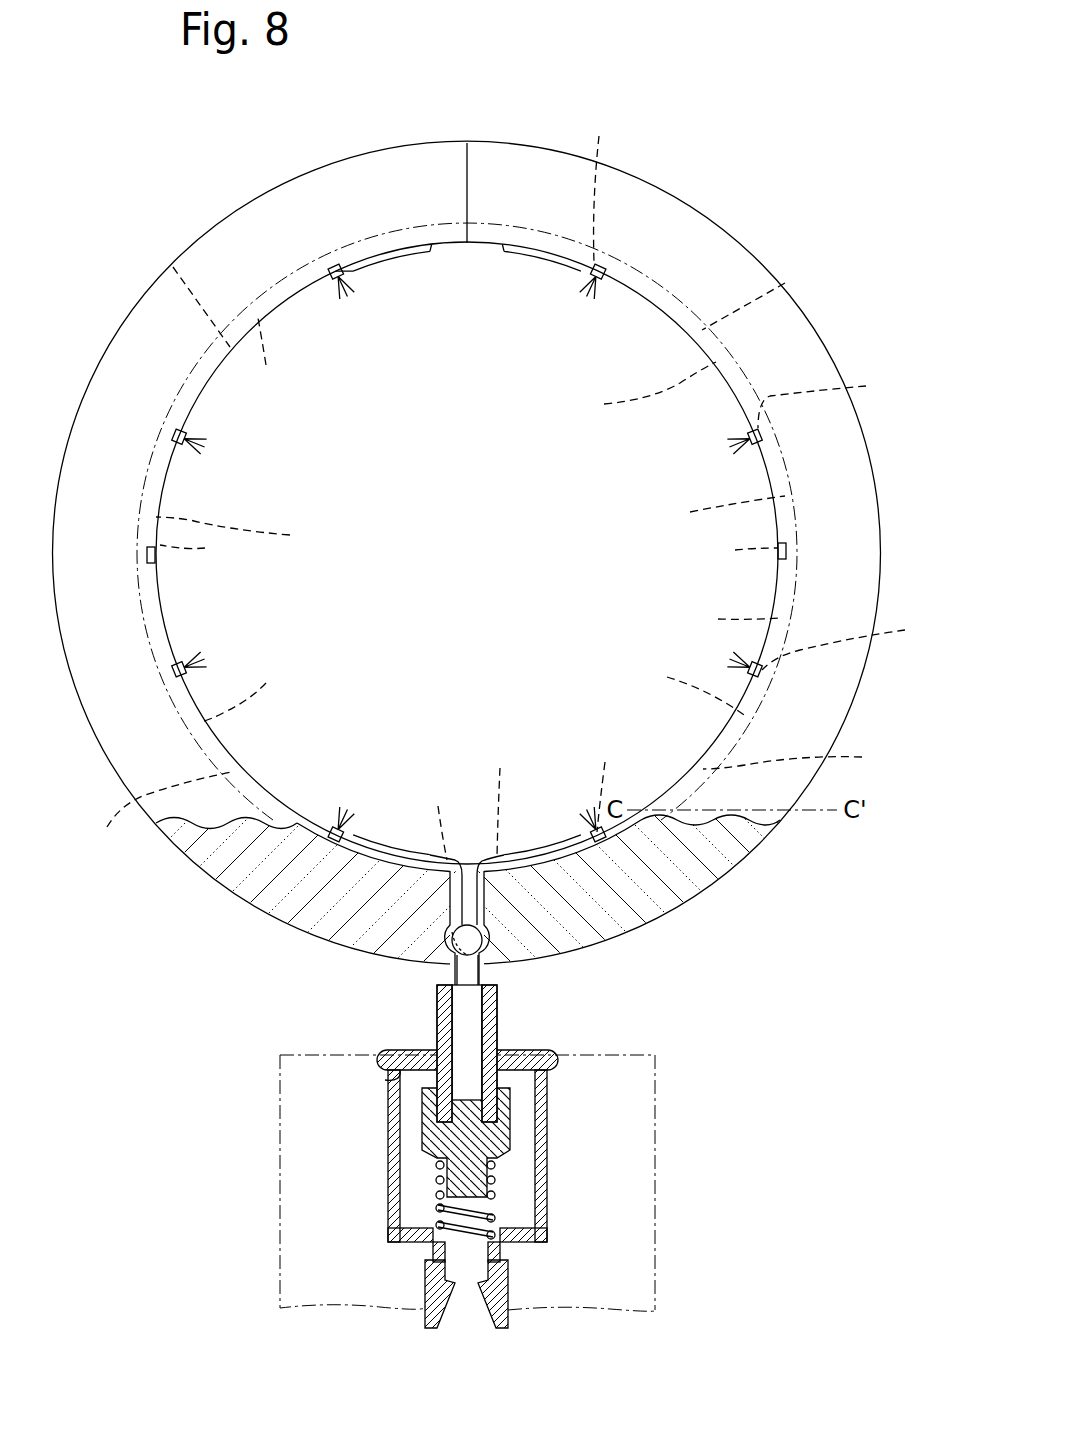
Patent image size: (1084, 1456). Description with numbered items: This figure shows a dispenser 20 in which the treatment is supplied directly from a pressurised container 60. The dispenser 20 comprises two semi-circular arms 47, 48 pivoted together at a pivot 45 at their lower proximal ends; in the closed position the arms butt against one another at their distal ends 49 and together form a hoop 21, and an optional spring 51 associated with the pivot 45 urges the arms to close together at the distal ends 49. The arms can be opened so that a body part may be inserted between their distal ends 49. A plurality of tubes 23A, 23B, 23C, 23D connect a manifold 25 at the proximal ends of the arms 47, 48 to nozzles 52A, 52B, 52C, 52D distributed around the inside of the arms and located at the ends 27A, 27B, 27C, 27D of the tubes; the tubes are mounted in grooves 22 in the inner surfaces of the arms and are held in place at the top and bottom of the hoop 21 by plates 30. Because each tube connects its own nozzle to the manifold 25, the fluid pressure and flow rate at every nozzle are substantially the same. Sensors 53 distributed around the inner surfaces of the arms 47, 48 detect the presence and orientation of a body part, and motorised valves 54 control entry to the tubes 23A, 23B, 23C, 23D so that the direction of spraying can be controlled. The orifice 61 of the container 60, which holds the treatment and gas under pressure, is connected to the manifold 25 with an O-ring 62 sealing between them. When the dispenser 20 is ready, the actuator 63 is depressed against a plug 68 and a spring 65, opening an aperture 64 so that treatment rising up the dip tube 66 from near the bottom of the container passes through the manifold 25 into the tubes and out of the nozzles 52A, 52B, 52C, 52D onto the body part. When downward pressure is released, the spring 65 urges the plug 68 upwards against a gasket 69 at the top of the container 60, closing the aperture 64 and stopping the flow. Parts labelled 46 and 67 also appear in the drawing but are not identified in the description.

The dispenser 20 is at (738, 233).
The hoop 21 is at (818, 368).
The grooves 22 is at (734, 612).
The tube 23A is at (465, 800).
The tube 23B is at (473, 685).
The tube 23C is at (470, 522).
The tube 23D is at (480, 371).
The manifold 25 is at (488, 962).
The end of tube 27A is at (613, 783).
The end of tube 27B is at (854, 638).
The end of tube 27C is at (835, 392).
The end of tube 27D is at (599, 185).
The plates 30 is at (400, 258).
The pivot 45 is at (440, 925).
The groove 46 is at (463, 858).
The semi-circular arm 47 is at (140, 765).
The semi-circular arm 48 is at (838, 560).
The distal ends 49 is at (448, 150).
The spring 51 is at (481, 938).
The nozzle 52A is at (337, 831).
The nozzle 52B is at (186, 663).
The nozzle 52C is at (181, 442).
The nozzle 52D is at (336, 279).
The sensors 53 is at (173, 267).
The motorised valves 54 is at (456, 945).
The container 60 is at (655, 1082).
The orifice 61 is at (440, 998).
The O-ring 62 is at (497, 1000).
The actuator 63 is at (497, 1032).
The aperture 64 is at (438, 1080).
The spring 65 is at (497, 1198).
The dip tube 66 is at (508, 1269).
The flange 67 is at (533, 1080).
The plug 68 is at (512, 1102).
The gasket 69 is at (382, 1080).